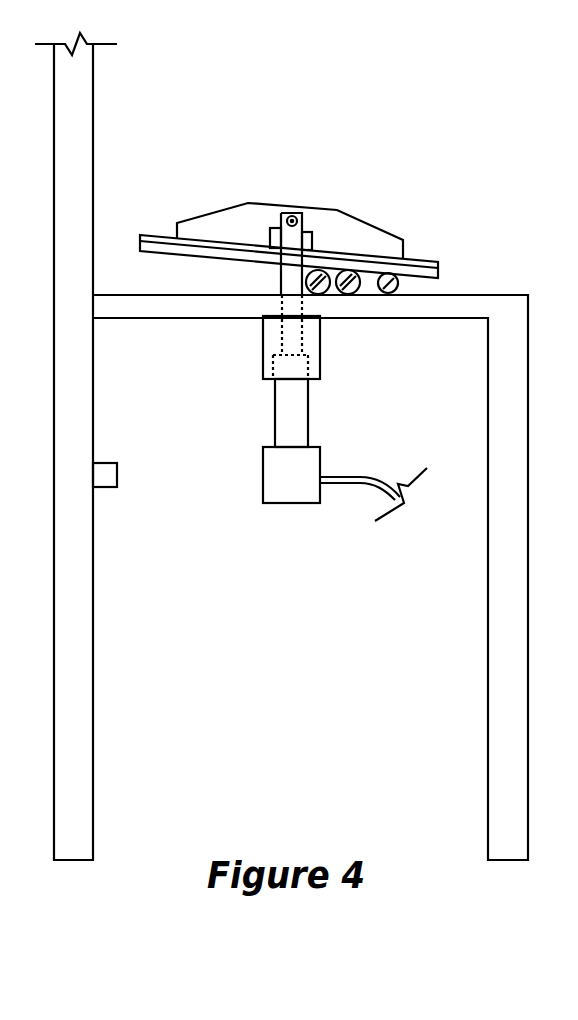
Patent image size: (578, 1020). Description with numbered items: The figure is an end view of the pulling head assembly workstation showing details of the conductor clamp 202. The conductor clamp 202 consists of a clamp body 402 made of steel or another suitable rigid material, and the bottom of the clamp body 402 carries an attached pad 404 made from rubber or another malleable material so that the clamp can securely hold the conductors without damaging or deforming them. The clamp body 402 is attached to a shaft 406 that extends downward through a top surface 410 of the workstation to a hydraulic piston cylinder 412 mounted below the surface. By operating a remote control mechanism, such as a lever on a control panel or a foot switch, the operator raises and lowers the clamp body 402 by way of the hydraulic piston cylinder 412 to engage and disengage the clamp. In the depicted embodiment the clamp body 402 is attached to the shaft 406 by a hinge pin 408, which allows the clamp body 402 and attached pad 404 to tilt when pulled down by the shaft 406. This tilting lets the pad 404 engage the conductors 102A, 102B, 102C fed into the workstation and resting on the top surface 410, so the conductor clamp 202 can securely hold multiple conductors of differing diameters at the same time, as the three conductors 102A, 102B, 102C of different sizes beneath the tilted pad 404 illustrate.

The conductor clamp 202 is at (196, 152).
The clamp body 402 is at (367, 243).
The pad 404 is at (153, 249).
The shaft 406 is at (292, 278).
The hinge pin 408 is at (292, 216).
The top surface 410 is at (453, 295).
The hydraulic piston cylinder 412 is at (288, 414).
The conductor 102A is at (393, 293).
The conductor 102B is at (352, 294).
The conductor 102C is at (321, 294).